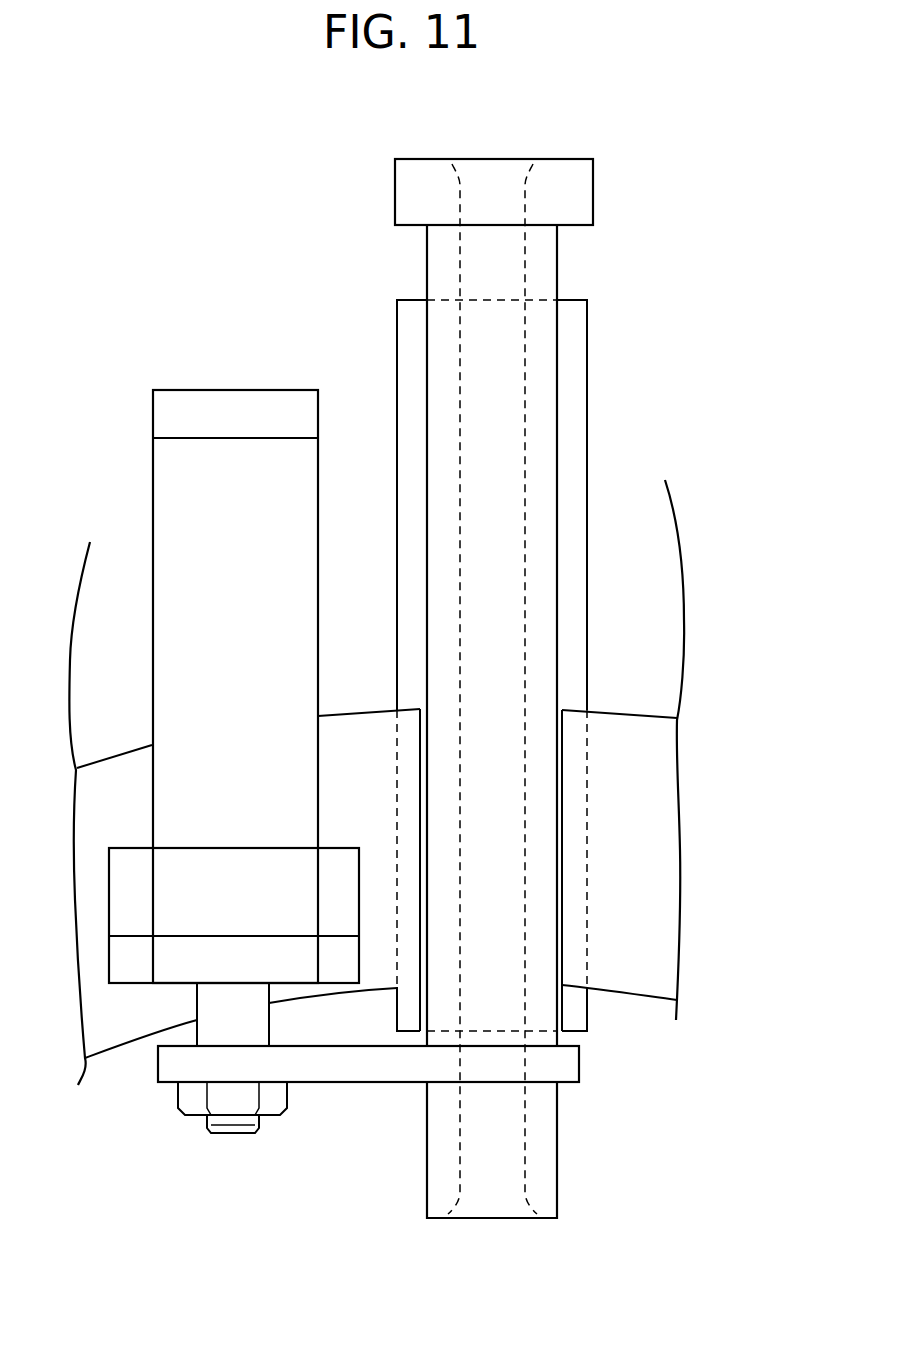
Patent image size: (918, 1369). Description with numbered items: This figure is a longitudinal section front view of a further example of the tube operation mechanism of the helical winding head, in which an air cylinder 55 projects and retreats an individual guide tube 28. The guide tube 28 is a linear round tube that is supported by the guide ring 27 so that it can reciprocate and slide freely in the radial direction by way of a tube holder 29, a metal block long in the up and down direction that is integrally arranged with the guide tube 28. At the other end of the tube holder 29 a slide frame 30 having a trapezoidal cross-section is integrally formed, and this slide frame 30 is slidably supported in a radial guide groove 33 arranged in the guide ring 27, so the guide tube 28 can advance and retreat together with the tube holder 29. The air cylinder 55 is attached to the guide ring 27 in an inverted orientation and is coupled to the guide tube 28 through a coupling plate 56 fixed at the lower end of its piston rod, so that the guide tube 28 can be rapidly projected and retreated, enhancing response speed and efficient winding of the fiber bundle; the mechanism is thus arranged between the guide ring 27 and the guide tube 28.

The guide ring 27 is at (677, 778).
The guide tube 28 is at (548, 420).
The tube holder 29 is at (398, 370).
The slide frame 30 is at (580, 332).
The radial guide groove 33 is at (560, 753).
The air cylinder 55 is at (157, 690).
The coupling plate 56 is at (362, 1077).